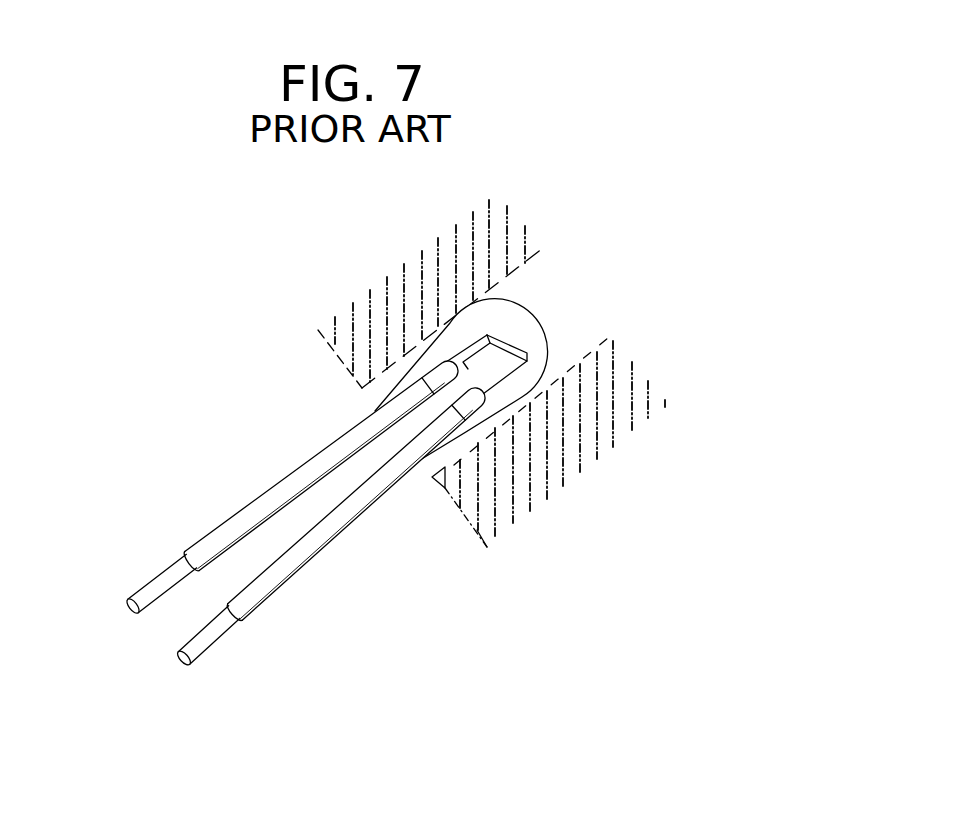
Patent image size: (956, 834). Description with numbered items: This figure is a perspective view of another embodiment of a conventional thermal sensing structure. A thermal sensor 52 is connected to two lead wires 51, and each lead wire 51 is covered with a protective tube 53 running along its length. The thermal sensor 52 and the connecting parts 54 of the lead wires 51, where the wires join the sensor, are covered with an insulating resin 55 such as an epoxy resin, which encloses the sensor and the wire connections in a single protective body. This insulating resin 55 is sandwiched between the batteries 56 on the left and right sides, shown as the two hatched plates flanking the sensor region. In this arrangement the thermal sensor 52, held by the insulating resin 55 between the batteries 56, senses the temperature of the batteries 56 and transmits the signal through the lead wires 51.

The lead wires 51 is at (153, 603).
The thermal sensor 52 is at (500, 355).
The protective tube 53 is at (262, 528).
The connecting parts 54 is at (523, 404).
The insulating resin 55 is at (550, 365).
The batteries 56 is at (552, 263).